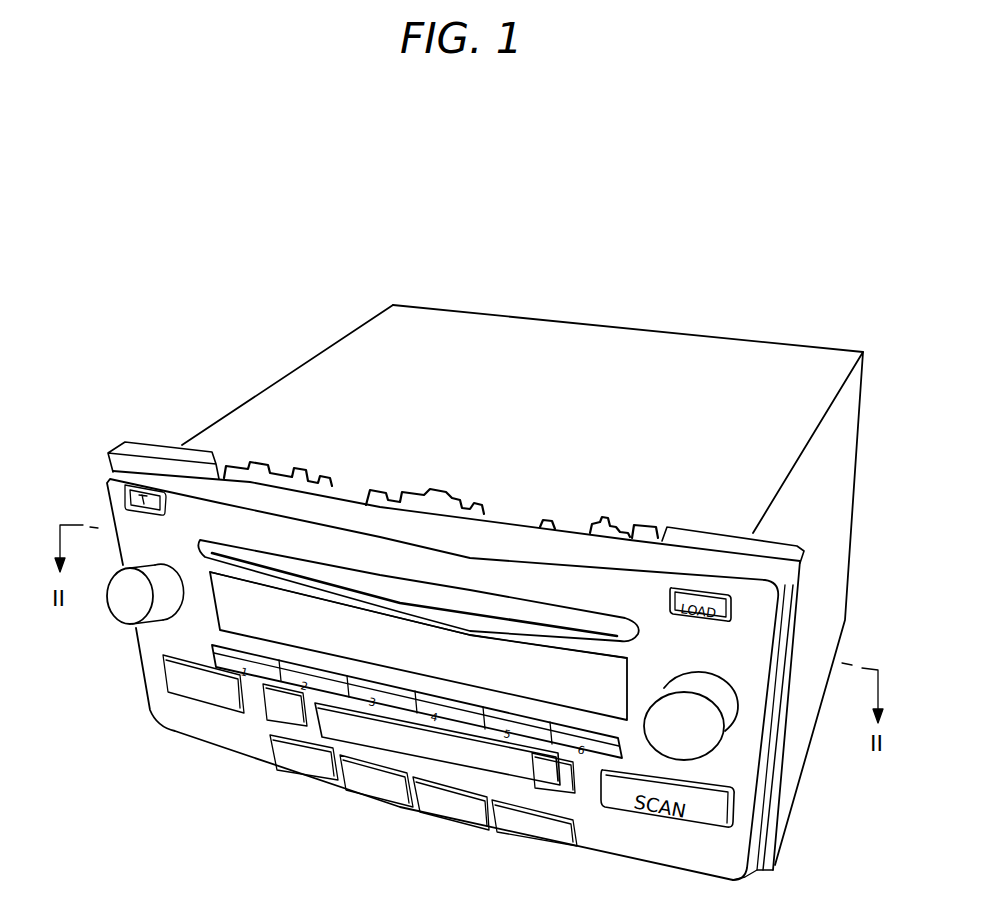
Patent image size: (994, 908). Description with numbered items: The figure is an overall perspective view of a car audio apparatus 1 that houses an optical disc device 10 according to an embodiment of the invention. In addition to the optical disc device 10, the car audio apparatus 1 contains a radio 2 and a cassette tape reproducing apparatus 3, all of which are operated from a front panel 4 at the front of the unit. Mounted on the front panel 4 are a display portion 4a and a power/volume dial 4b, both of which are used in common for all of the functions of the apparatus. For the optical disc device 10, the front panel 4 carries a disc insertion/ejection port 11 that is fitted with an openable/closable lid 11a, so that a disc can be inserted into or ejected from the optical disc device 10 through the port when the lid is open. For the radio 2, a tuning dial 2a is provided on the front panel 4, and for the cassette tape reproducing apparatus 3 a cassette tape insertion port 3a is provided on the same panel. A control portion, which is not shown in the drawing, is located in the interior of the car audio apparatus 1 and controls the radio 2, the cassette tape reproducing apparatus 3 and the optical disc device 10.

The car audio apparatus 1 is at (190, 372).
The radio 2 is at (741, 742).
The tuning dial 2a is at (697, 745).
The cassette tape reproducing apparatus 3 is at (260, 730).
The cassette tape insertion port 3a is at (385, 743).
The front panel 4 is at (732, 603).
The display portion 4a is at (487, 647).
The power/volume dial 4b is at (122, 612).
The optical disc device 10 is at (253, 585).
The disc insertion/ejection port 11 is at (393, 597).
The openable/closable lid 11a is at (297, 568).